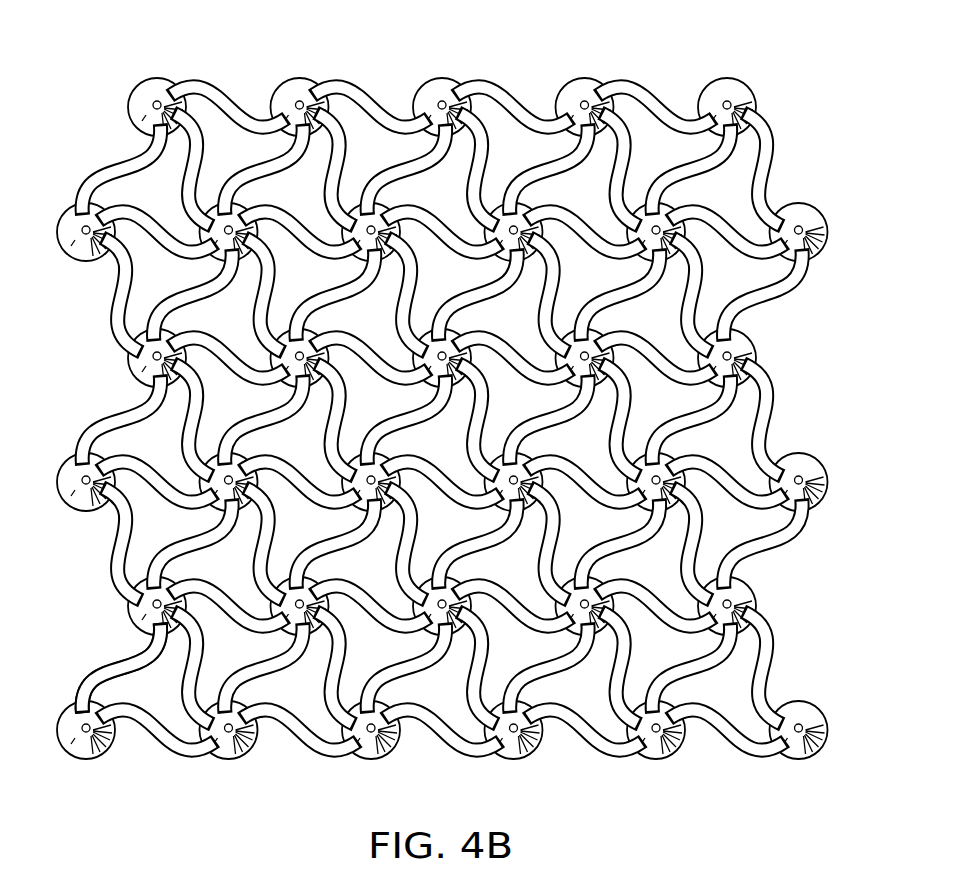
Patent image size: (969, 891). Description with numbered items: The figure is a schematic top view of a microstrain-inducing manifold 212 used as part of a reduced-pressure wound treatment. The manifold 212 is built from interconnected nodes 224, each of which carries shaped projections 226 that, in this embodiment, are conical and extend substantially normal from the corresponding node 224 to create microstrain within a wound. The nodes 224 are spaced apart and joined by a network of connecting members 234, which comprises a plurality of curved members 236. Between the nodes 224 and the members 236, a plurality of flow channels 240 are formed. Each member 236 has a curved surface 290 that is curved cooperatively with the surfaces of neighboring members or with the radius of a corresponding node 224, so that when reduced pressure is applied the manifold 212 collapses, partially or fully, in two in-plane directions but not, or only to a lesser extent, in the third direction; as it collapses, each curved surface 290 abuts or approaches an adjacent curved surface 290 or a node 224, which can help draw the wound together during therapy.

The microstrain-inducing manifold 212 is at (118, 98).
The interconnected node 224 is at (726, 80).
The shaped projection 226 is at (289, 95).
The network of connecting members 234 is at (488, 72).
The curved member 236 is at (628, 80).
The flow channel 240 is at (158, 418).
The curved surface 290 is at (772, 131).